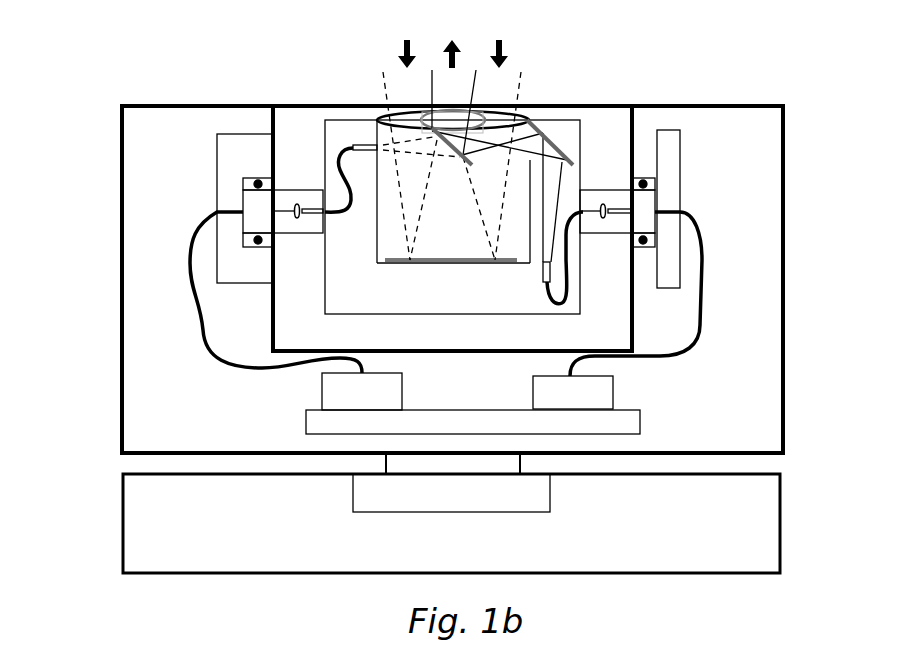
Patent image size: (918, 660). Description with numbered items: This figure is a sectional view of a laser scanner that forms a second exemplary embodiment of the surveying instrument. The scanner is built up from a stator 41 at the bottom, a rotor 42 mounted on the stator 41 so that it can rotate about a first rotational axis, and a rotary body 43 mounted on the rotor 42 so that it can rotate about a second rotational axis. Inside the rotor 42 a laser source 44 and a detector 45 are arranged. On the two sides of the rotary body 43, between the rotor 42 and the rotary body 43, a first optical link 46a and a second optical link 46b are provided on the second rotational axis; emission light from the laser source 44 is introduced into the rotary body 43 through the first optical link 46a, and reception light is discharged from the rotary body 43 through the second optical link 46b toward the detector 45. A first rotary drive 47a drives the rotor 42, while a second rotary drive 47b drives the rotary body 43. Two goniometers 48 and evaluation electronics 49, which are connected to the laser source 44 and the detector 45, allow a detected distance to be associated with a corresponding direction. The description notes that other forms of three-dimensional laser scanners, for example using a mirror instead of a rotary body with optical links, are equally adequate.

The stator 41 is at (497, 523).
The rotor 42 is at (496, 290).
The rotary body 43 is at (598, 192).
The laser source 44 is at (702, 333).
The detector 45 is at (221, 318).
The first optical link 46a is at (731, 174).
The second optical link 46b is at (176, 174).
The first rotary drive 47a is at (290, 517).
The second rotary drive 47b is at (151, 208).
The goniometers 48 is at (751, 209).
The evaluation electronics 49 is at (340, 443).